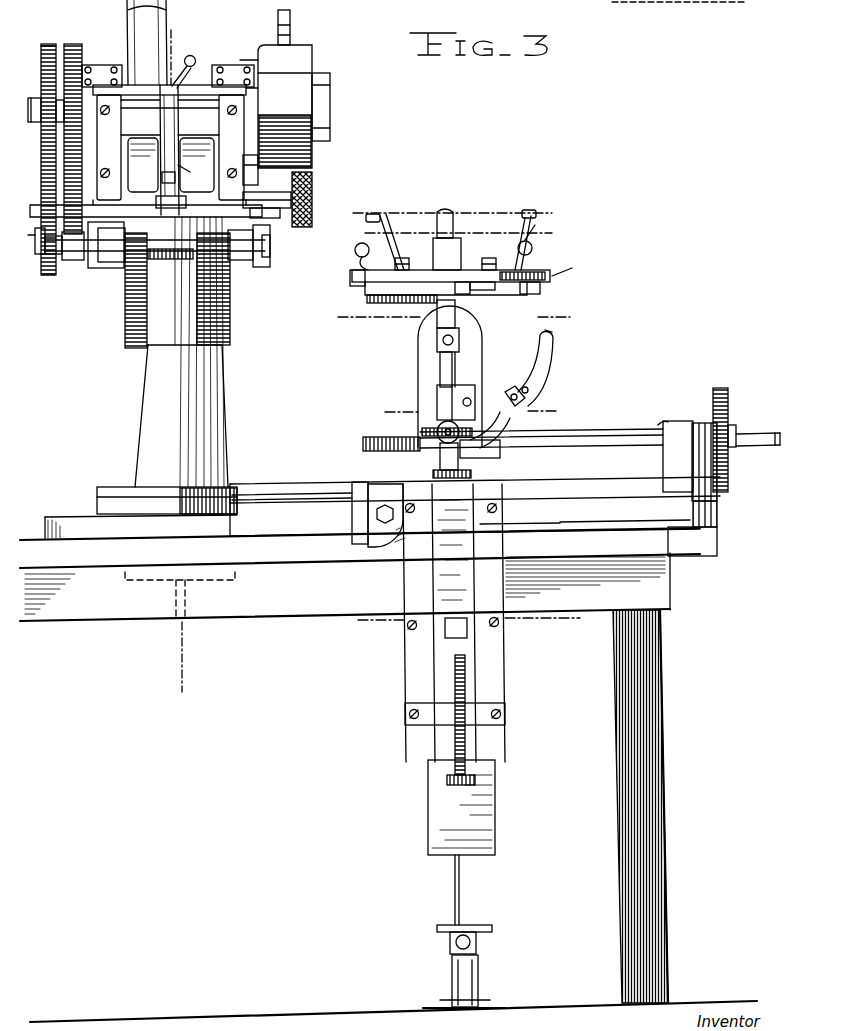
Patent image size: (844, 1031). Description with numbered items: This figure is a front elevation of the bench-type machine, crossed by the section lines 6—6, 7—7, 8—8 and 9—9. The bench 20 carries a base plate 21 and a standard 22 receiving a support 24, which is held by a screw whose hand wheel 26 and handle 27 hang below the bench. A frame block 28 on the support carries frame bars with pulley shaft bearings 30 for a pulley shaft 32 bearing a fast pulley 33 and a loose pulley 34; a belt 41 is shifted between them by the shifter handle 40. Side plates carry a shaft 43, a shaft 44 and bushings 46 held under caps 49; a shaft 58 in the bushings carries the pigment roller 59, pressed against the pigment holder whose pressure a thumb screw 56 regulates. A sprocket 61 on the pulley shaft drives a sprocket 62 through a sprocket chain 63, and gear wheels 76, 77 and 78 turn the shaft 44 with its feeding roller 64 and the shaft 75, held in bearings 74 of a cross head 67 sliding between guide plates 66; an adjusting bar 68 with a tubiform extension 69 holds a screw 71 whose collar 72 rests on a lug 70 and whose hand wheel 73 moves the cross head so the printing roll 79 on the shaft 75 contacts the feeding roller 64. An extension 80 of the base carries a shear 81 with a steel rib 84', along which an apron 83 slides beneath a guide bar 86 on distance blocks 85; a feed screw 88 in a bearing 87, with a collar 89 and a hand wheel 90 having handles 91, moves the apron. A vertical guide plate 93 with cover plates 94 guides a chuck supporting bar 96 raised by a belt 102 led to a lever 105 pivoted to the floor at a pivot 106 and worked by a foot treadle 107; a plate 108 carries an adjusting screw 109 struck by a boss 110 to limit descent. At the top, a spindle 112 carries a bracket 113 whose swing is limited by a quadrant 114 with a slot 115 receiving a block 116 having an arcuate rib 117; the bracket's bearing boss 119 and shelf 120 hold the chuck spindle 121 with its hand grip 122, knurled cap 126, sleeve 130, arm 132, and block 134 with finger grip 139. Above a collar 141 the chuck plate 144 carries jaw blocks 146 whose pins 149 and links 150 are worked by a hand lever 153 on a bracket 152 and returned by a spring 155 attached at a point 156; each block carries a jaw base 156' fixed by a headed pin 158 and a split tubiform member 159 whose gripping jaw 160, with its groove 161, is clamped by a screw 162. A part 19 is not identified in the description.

The section line 6— 6 is at (472, 411).
The section line 7— 7 is at (454, 318).
The section line 8— 8 is at (174, 35).
The section line 9— 9 is at (462, 627).
The bracket 19 is at (236, 64).
The bench 20 is at (235, 618).
The base plate 21 is at (58, 517).
The standard 22 is at (142, 434).
The support 24 is at (158, 345).
The hand wheel 26 is at (236, 581).
The handle 27 is at (175, 618).
The frame block 28 is at (258, 262).
The pulley shaft bearing 30 is at (72, 262).
The pulley shaft 32 is at (36, 240).
The fast pulley 33 is at (230, 342).
The loose pulley 34 is at (124, 340).
The shifter handle 40 is at (184, 64).
The belt 41 is at (158, 22).
The shaft 43 is at (250, 165).
The shaft 44 is at (132, 100).
The bushing 46 is at (216, 66).
The cap 49 is at (102, 67).
The thumb screw 56 is at (290, 30).
The shaft 58 is at (28, 118).
The roller 59 is at (313, 50).
The sprocket 61 is at (48, 256).
The sprocket 62 is at (42, 61).
The sprocket chain 63 is at (42, 189).
The feeding roller 64 is at (322, 111).
The guide plates 66 is at (170, 147).
The cross head 67 is at (198, 118).
The adjusting bar 68 is at (202, 85).
The tubiform extension 69 is at (162, 116).
The peripheral lug 70 is at (156, 202).
The screw 71 is at (163, 180).
The collar 72 is at (186, 174).
The hand wheel 73 is at (165, 262).
The bearings 74 is at (100, 268).
The shaft 75 is at (280, 210).
The gear wheel 76 is at (76, 48).
The gear wheel 77 is at (63, 158).
The gear wheel 78 is at (92, 270).
The printing roll 79 is at (313, 182).
The extension 80 is at (685, 520).
The shear 81 is at (672, 540).
The apron 83 is at (358, 492).
The square cold roll steel rib 84' is at (585, 511).
The distance block 85 is at (258, 492).
The guide bar 86 is at (292, 486).
The bearing 87 is at (682, 421).
The feed screw 88 is at (363, 442).
The collar 89 is at (660, 425).
The hand wheel 90 is at (720, 388).
The handles 91 is at (765, 447).
The vertical guide plate 93 is at (400, 565).
The cover plates 94 is at (475, 583).
The chuck supporting bar 96 is at (436, 818).
The belt 102 is at (452, 904).
The lever 105 is at (478, 965).
The pivot 106 is at (452, 994).
The foot treadle 107 is at (440, 935).
The plate 108 is at (405, 730).
The adjusting screw 109 is at (455, 770).
The boss 110 is at (446, 640).
The spindle 112 is at (437, 342).
The bracket 113 is at (440, 366).
The quadrant 114 is at (548, 340).
The slot 115 is at (556, 336).
The block 116 is at (512, 386).
The arcuate rib 117 is at (536, 385).
The bearing boss 119 is at (453, 340).
The shelf 120 is at (440, 455).
The chuck spindle 121 is at (440, 372).
The hand grip 122 is at (452, 480).
The knurled edged cap 126 is at (430, 425).
The sleeve 130 is at (464, 390).
The arm 132 is at (472, 402).
The block 134 is at (482, 462).
The finger grip 139 is at (434, 468).
The collar 141 is at (437, 316).
The chuck plate 144 is at (477, 247).
The chuck jaw block 146 is at (410, 268).
The pin 149 is at (542, 290).
The links 150 is at (492, 292).
The bracket 152 is at (485, 268).
The hand lever 153 is at (548, 268).
The spring 155 is at (380, 304).
The spring attachment point 156 is at (477, 298).
The base portion 156' is at (341, 286).
The headed pin 158 is at (385, 253).
The split tubiform member 159 is at (530, 240).
The article gripping jaw 160 is at (376, 228).
The groove 161 is at (526, 212).
The clamping screw 162 is at (533, 249).